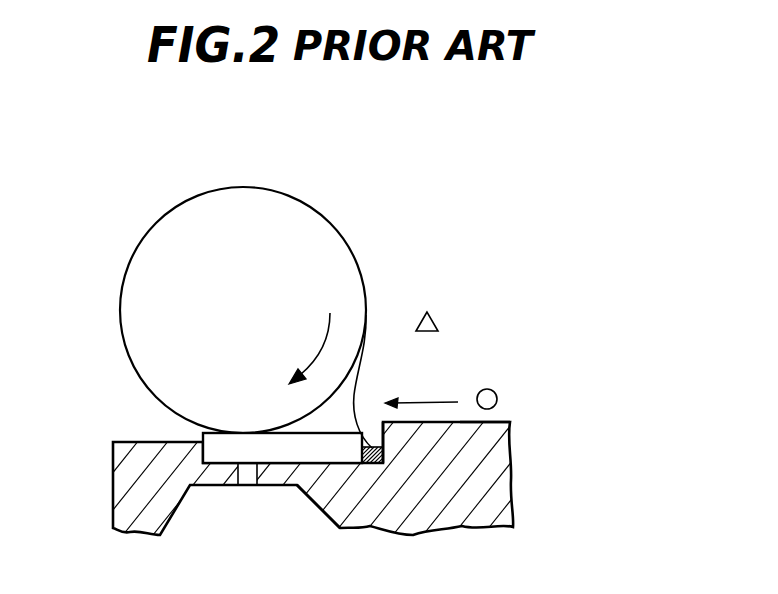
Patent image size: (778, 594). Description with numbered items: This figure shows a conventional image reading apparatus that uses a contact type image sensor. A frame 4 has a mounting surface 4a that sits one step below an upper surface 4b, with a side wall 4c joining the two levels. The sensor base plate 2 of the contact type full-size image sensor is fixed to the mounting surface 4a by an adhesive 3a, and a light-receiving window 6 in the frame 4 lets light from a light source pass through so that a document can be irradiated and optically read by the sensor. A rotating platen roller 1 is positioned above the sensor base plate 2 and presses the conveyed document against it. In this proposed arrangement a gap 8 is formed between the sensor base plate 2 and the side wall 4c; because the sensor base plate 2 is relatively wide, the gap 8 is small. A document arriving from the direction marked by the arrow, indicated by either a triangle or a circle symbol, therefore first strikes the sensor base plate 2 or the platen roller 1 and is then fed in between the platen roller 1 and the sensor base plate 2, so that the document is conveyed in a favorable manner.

The platen roller 1 is at (327, 240).
The sensor base plate 2 is at (340, 463).
The adhesive 3a is at (371, 379).
The frame 4 is at (136, 472).
The mounting surface 4a is at (303, 488).
The surface 4b is at (501, 422).
The side wall 4c is at (383, 443).
The light-receiving window 6 is at (248, 477).
The gap 8 is at (375, 442).